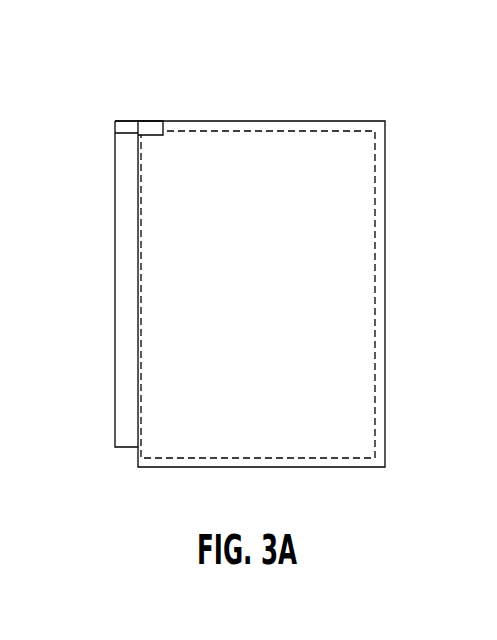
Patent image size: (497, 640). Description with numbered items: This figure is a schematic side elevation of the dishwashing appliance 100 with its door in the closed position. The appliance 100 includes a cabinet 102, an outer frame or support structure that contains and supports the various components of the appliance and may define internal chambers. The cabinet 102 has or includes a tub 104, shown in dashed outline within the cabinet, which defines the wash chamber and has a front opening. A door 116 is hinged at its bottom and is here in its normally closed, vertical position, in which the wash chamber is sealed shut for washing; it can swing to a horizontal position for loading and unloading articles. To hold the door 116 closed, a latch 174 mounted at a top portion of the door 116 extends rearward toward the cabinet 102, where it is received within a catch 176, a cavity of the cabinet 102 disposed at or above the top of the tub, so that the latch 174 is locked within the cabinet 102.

The dishwashing appliance 100 is at (330, 67).
The cabinet 102 is at (282, 467).
The tub 104 is at (375, 237).
The door 116 is at (113, 277).
The latch 174 is at (130, 121).
The catch 176 is at (163, 136).